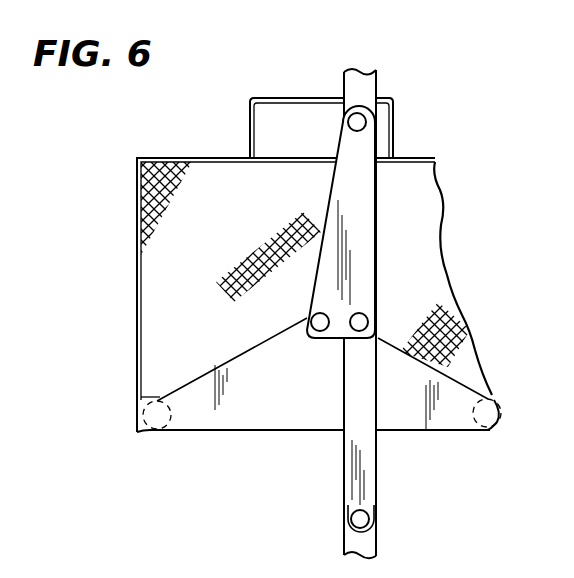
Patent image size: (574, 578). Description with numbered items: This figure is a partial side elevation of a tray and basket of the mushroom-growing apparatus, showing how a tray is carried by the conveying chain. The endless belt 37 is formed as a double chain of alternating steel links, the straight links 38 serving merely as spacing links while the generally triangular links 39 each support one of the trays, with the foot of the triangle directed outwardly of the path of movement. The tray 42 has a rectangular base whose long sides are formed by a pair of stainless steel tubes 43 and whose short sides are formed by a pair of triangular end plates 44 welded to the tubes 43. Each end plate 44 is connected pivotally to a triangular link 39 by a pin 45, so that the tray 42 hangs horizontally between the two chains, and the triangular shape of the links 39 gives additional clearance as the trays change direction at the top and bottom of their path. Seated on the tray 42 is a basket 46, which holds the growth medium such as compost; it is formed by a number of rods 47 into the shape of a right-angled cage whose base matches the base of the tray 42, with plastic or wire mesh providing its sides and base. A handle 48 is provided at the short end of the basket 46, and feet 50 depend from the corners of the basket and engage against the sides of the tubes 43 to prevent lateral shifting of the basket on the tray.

The endless belt 37 is at (377, 507).
The straight link 38 is at (366, 457).
The triangular link 39 is at (380, 222).
The tray 42 is at (297, 429).
The stainless steel tube 43 is at (155, 432).
The triangular end plate 44 is at (232, 420).
The pin 45 is at (309, 314).
The basket 46 is at (155, 362).
The rod 47 is at (214, 158).
The handle 48 is at (281, 99).
The foot 50 is at (136, 434).